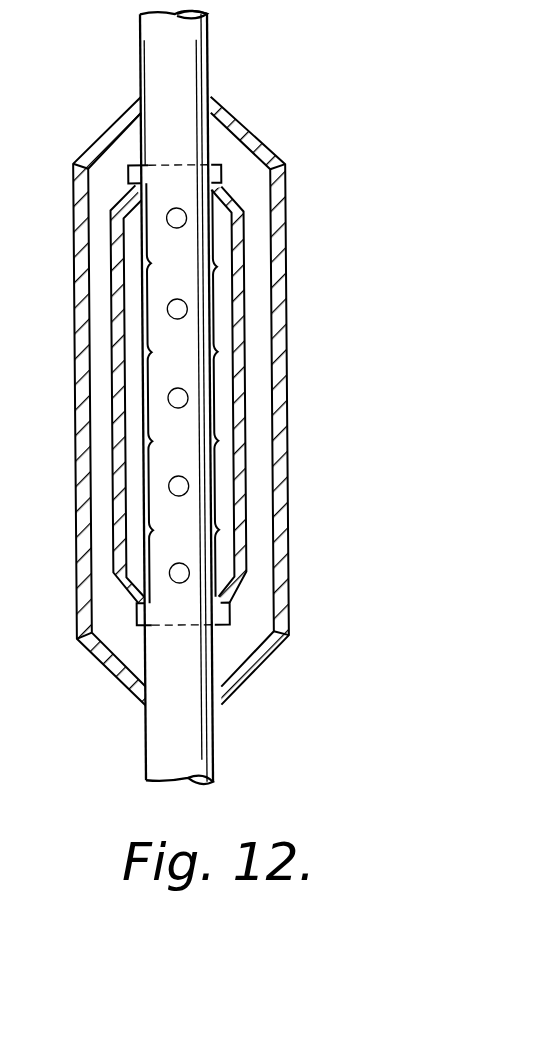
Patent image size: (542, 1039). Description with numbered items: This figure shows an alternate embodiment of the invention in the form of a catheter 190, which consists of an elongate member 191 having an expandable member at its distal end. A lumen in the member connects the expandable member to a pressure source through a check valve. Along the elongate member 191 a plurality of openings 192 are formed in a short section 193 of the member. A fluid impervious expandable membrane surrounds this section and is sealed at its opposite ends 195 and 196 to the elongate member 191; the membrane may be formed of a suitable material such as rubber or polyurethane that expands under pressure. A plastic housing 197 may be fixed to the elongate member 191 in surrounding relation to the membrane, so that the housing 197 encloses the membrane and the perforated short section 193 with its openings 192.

The catheter 190 is at (292, 120).
The elongate member 191 is at (200, 32).
The openings 192 is at (188, 308).
The short section 193 is at (203, 408).
The end of membrane 195 is at (192, 611).
The end of membrane 196 is at (187, 181).
The plastic housing 197 is at (280, 521).